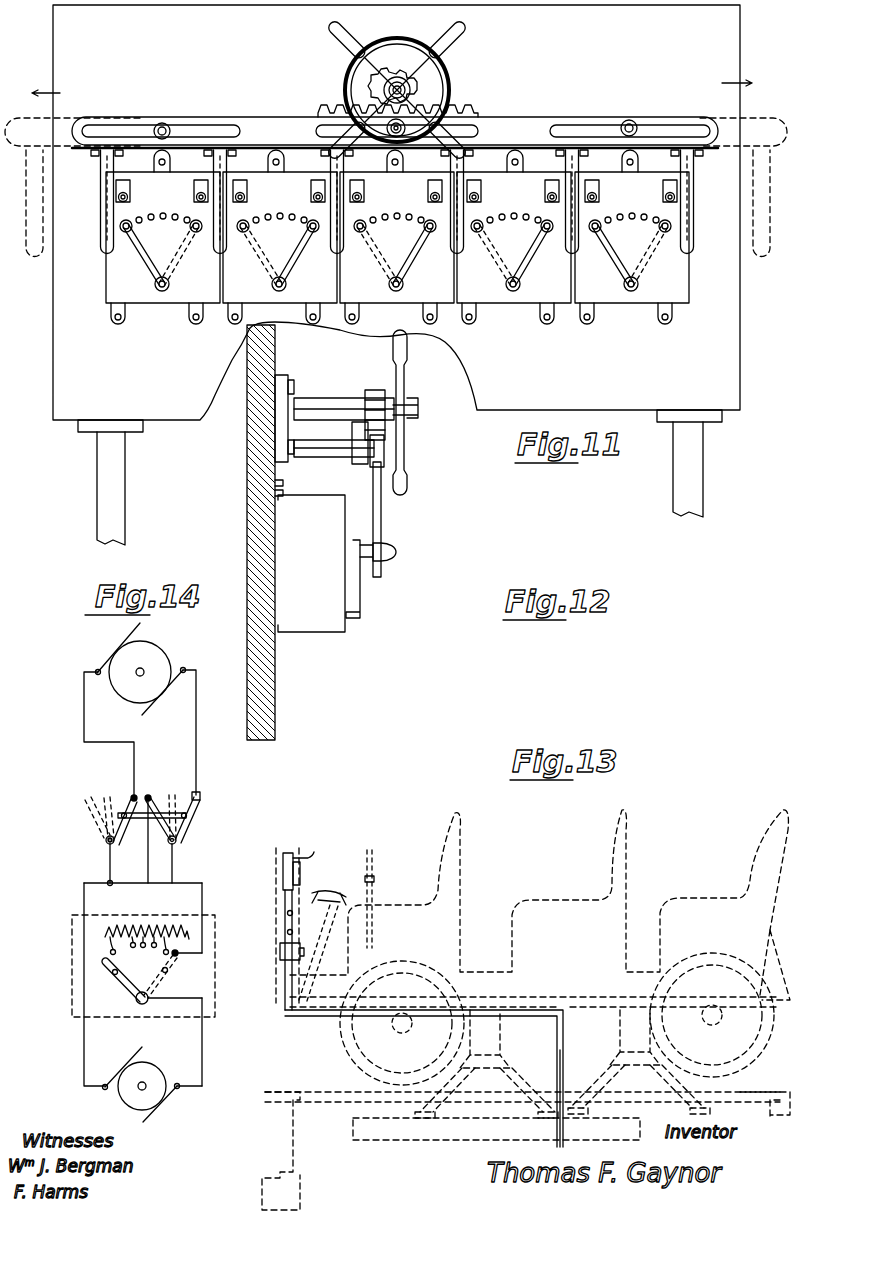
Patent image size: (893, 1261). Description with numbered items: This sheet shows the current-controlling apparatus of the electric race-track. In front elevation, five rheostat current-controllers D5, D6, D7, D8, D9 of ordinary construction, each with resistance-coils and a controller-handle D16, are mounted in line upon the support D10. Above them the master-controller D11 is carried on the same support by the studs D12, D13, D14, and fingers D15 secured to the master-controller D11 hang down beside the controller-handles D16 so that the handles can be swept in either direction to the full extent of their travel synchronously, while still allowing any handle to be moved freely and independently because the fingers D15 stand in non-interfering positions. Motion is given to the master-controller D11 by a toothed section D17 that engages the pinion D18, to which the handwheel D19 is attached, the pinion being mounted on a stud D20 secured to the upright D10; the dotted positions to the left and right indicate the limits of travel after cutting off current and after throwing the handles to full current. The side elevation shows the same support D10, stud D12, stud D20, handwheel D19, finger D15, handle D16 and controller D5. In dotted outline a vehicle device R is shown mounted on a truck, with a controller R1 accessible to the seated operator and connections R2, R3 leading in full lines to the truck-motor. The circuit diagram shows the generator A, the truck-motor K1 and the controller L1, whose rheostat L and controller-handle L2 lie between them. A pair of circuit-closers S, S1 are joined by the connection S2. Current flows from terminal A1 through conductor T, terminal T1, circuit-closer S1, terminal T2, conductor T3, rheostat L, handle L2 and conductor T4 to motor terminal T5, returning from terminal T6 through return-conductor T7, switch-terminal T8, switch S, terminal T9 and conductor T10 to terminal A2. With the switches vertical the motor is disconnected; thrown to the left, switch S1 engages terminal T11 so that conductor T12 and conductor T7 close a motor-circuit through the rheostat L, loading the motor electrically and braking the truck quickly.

In FIG. 11, the current-controller D5 is at (163, 248).
In FIG. 12, the current-controller D5 is at (310, 556).
In FIG. 11, the current-controller D6 is at (280, 248).
In FIG. 11, the current-controller D7 is at (397, 248).
In FIG. 11, the current-controller D8 is at (514, 248).
In FIG. 11, the current-controller D9 is at (632, 248).
In FIG. 11, the support D10 is at (396, 275).
In FIG. 12, the support D10 is at (252, 470).
In FIG. 11, the master-controller D11 is at (248, 125).
In FIG. 11, the stud D12 is at (163, 123).
In FIG. 12, the stud D12 is at (330, 457).
In FIG. 11, the stud D13 is at (388, 137).
In FIG. 11, the stud D14 is at (630, 120).
In FIG. 11, the finger D15 is at (100, 178).
In FIG. 12, the finger D15 is at (381, 528).
In FIG. 11, the controller-handle D16 is at (143, 258).
In FIG. 12, the controller-handle D16 is at (398, 555).
In FIG. 11, the toothed section D17 is at (468, 110).
In FIG. 11, the pinion D18 is at (396, 80).
In FIG. 11, the handwheel D19 is at (345, 78).
In FIG. 12, the handwheel D19 is at (408, 392).
In FIG. 11, the stud D20 is at (418, 86).
In FIG. 12, the stud D20 is at (320, 398).
In FIG. 14, the generator A is at (140, 672).
In FIG. 14, the generator terminal A1 is at (186, 668).
In FIG. 14, the generator terminal A2 is at (98, 668).
In FIG. 14, the conductor T is at (196, 722).
In FIG. 14, the terminal T1 is at (200, 796).
In FIG. 14, the terminal T2 is at (176, 846).
In FIG. 14, the conductor T3 is at (203, 890).
In FIG. 14, the conductor T4 is at (203, 1060).
In FIG. 14, the motor terminal T5 is at (178, 1089).
In FIG. 14, the motor terminal T6 is at (104, 1090).
In FIG. 14, the return-conductor T7 is at (84, 1060).
In FIG. 14, the switch-terminal T8 is at (105, 842).
In FIG. 14, the terminal T9 is at (132, 797).
In FIG. 14, the conductor T10 is at (84, 742).
In FIG. 14, the terminal T11 is at (148, 795).
In FIG. 14, the conductor T12 is at (146, 885).
In FIG. 14, the switch S is at (111, 829).
In FIG. 14, the circuit-closer S1 is at (178, 836).
In FIG. 14, the connection S2 is at (152, 826).
In FIG. 14, the rheostat L is at (107, 930).
In FIG. 14, the controller L1 is at (72, 942).
In FIG. 14, the controller-handle L2 is at (125, 985).
In FIG. 14, the truck-motor K1 is at (141, 1084).
In FIG. 13, the vehicle device R is at (526, 1010).
In FIG. 13, the controller R1 is at (290, 850).
In FIG. 13, the connection R2 is at (557, 1046).
In FIG. 13, the connection R3 is at (564, 1062).